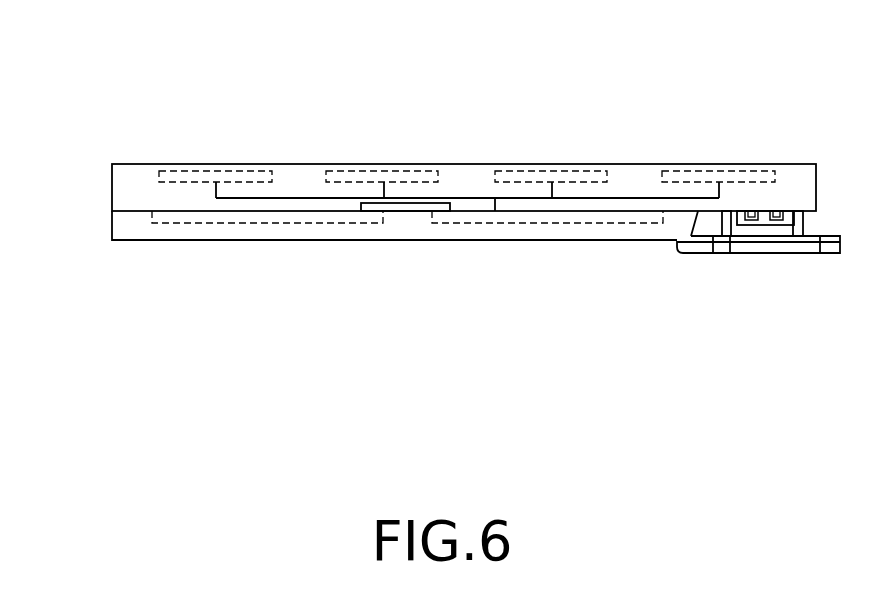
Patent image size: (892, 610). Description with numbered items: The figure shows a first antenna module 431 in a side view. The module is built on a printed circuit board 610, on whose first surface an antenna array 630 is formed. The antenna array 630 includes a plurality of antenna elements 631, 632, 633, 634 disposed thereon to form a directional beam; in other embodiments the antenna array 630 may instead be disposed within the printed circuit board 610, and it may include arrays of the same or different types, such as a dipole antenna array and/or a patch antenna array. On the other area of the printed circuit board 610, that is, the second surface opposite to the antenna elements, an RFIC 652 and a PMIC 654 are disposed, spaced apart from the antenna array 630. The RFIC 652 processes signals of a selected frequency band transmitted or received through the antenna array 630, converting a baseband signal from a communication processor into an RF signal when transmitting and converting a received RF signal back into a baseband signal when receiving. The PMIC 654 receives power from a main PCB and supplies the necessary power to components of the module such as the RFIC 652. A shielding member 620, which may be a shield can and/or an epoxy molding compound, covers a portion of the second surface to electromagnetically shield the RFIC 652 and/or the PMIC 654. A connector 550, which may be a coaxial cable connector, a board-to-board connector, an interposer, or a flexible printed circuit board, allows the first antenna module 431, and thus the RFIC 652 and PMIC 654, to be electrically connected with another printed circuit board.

The first antenna module 431 is at (97, 89).
The printed circuit board 610 is at (124, 190).
The shielding member 620 is at (124, 226).
The antenna array 630 is at (713, 102).
The antenna element 631 is at (209, 171).
The antenna element 632 is at (377, 171).
The antenna element 633 is at (545, 171).
The antenna element 634 is at (713, 171).
The RFIC 652 is at (547, 224).
The PMIC 654 is at (267, 224).
The connector 550 is at (773, 249).